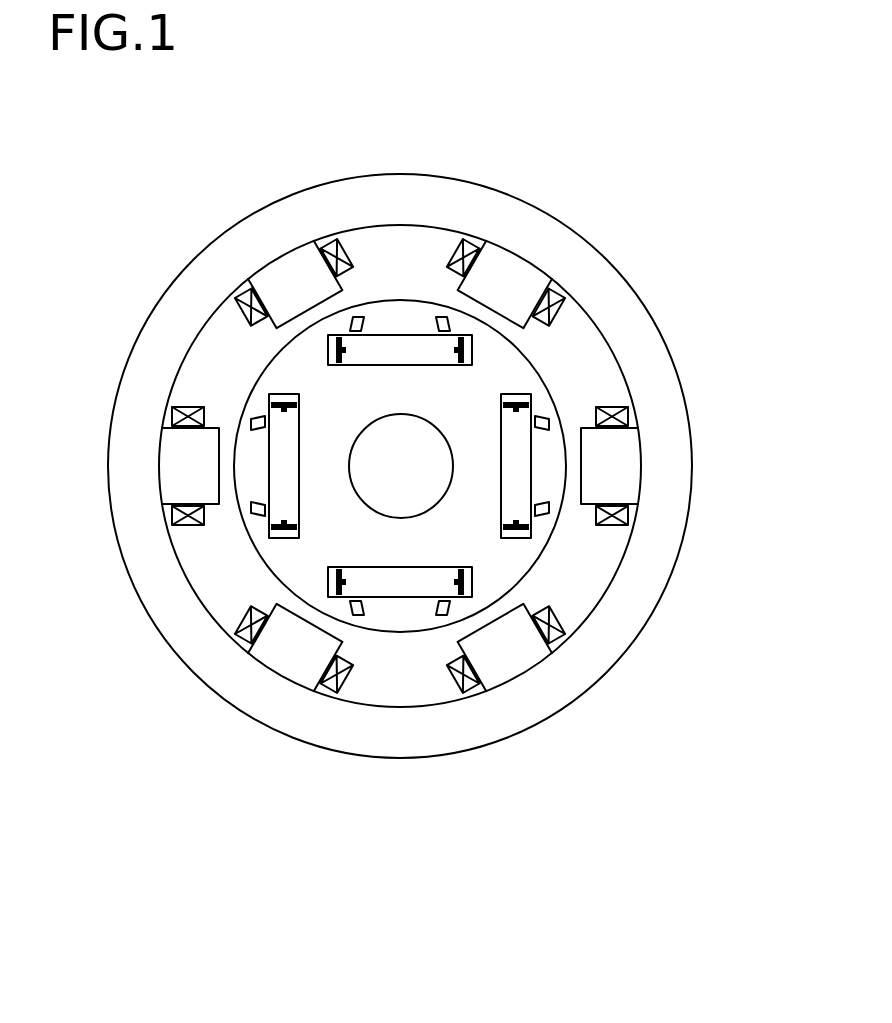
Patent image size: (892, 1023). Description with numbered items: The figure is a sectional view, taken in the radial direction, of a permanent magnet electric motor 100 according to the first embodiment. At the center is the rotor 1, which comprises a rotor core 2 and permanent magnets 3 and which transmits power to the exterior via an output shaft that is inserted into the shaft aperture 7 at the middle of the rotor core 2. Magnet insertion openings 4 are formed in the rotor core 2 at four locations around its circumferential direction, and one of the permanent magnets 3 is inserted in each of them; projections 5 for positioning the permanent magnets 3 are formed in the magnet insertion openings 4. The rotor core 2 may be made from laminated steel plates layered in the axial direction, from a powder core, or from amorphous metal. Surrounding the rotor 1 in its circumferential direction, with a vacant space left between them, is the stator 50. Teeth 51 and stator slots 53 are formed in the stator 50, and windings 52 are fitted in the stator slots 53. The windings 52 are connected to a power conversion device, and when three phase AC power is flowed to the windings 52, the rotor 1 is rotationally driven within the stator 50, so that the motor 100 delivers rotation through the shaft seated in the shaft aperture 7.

The permanent magnet electric motor 100 is at (597, 183).
The rotor 1 is at (549, 393).
The rotor core 2 is at (405, 613).
The permanent magnet 3 is at (395, 347).
The magnet insertion opening 4 is at (288, 545).
The projection 5 is at (270, 405).
The shaft aperture 7 is at (388, 452).
The stator 50 is at (623, 272).
The tooth 51 is at (615, 463).
The winding 52 is at (560, 627).
The stator slot 53 is at (210, 606).